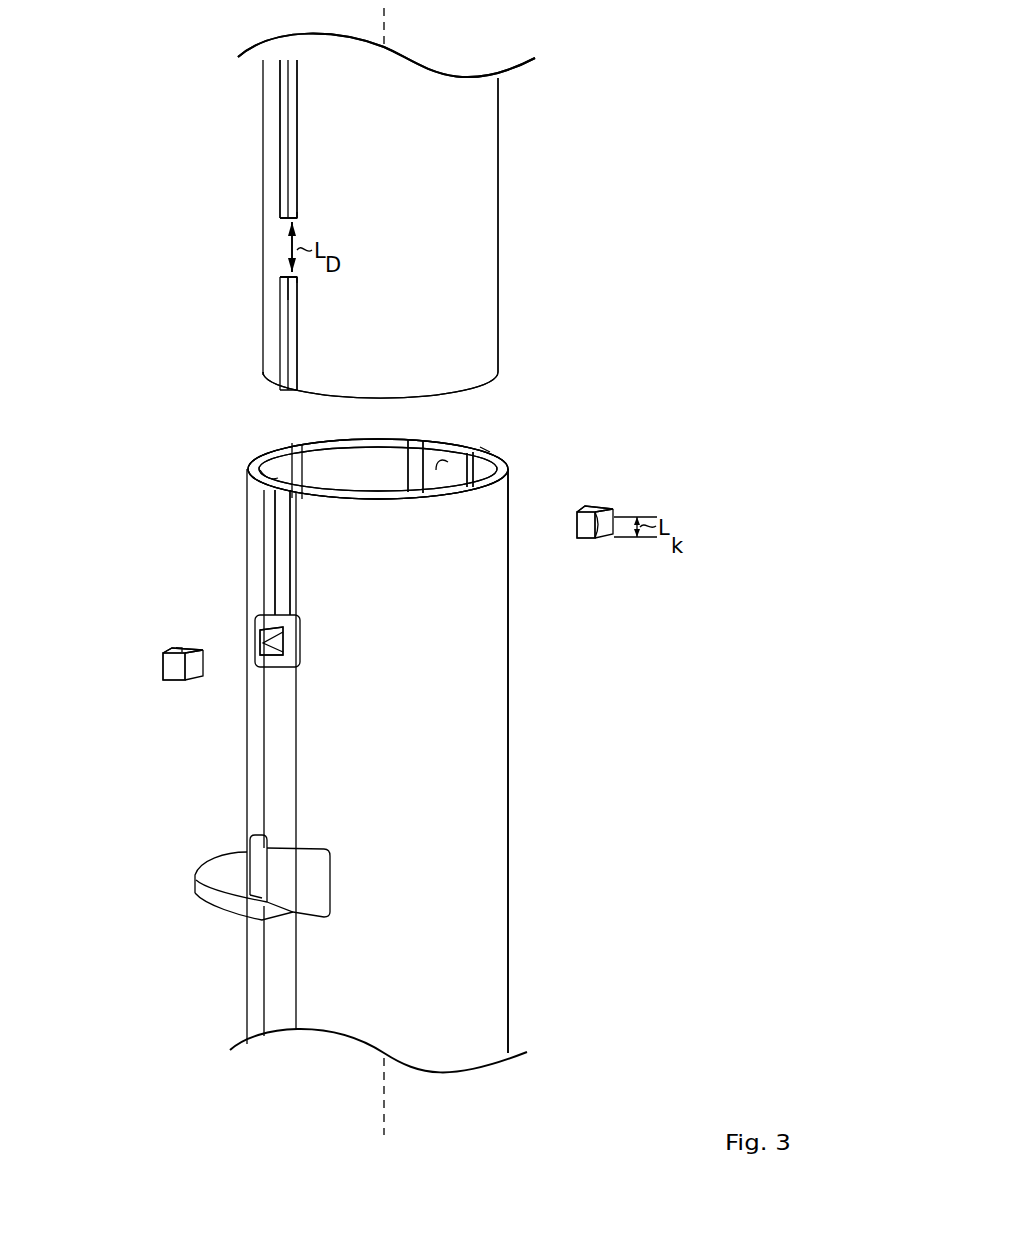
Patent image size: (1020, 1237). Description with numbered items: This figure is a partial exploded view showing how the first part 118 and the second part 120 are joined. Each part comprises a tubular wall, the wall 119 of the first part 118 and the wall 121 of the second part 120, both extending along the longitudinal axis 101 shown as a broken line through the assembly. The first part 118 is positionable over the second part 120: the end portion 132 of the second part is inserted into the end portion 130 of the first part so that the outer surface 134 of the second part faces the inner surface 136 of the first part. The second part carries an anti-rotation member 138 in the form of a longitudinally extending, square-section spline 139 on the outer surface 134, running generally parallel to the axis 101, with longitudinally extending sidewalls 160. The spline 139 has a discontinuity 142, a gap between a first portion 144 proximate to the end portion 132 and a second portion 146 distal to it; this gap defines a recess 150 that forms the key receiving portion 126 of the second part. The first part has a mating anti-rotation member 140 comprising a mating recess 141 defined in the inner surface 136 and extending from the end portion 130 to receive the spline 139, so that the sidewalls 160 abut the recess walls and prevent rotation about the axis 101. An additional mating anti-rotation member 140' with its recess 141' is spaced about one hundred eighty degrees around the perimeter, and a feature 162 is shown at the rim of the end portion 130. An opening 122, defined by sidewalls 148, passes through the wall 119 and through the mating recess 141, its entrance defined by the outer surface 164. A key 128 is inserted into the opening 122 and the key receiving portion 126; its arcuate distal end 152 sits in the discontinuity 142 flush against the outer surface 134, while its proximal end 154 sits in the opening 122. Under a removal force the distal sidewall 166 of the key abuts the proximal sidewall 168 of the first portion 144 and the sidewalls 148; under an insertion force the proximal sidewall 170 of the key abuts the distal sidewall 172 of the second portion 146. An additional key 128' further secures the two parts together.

The longitudinal axis 101 is at (383, 1131).
The first part 118 is at (468, 906).
The wall 119 is at (448, 777).
The second part 120 is at (466, 188).
The wall 121 is at (449, 297).
The opening 122 is at (300, 632).
The key receiving portion 126 is at (273, 242).
The key 128 is at (204, 704).
The additional key 128' is at (628, 562).
The end portion 130 is at (418, 425).
The end portion 132 is at (307, 410).
The outer surface 134 is at (443, 136).
The inner surface 136 is at (250, 470).
The anti-rotation member 138 is at (316, 344).
The spline 139 is at (293, 292).
The mating anti-rotation member 140 is at (351, 529).
The mating recess 141 is at (371, 552).
The additional mating anti-rotation member 140' is at (550, 446).
The alternative recess 141' is at (573, 446).
The discontinuity 142 is at (316, 218).
The first portion 144 is at (288, 366).
The second portion 146 is at (284, 146).
The sidewalls 148 is at (280, 636).
The recess 150 is at (273, 242).
The distal end 152 is at (172, 650).
The proximal end 154 is at (172, 668).
The sidewalls 160 is at (290, 107).
The notch 162 is at (478, 458).
The outer surface 164 is at (448, 700).
The distal sidewall 166 is at (585, 556).
The proximal sidewall 168 is at (284, 281).
The proximal sidewall 170 is at (605, 507).
The distal sidewall 172 is at (280, 219).